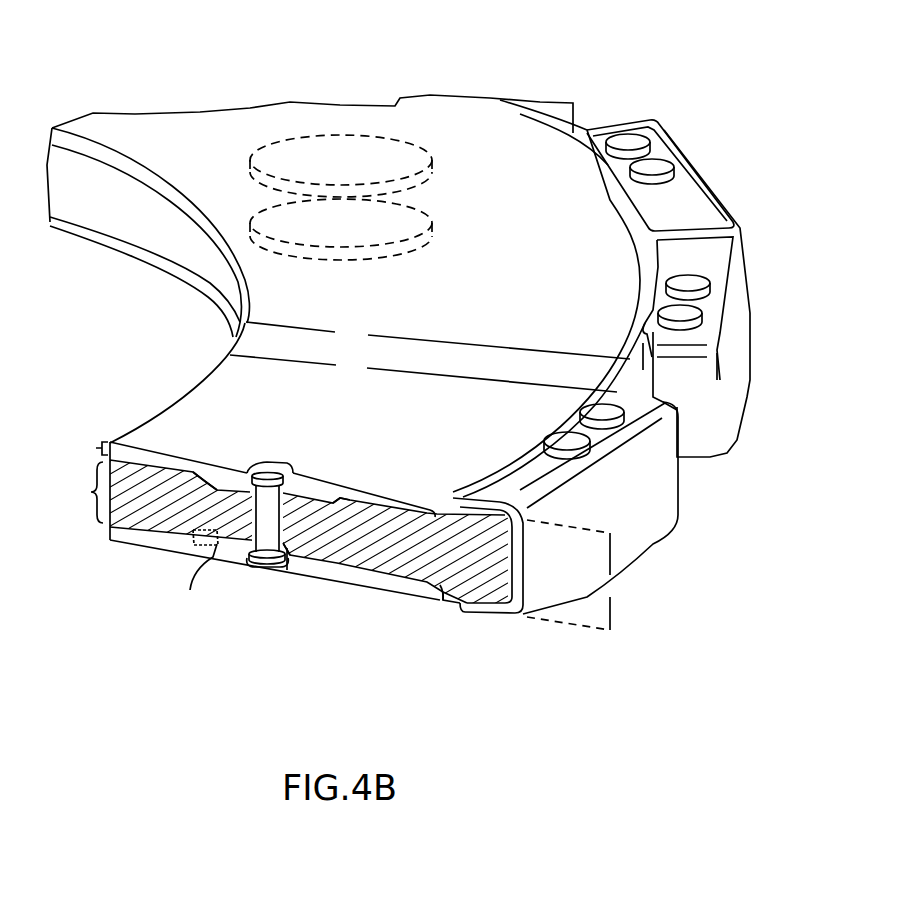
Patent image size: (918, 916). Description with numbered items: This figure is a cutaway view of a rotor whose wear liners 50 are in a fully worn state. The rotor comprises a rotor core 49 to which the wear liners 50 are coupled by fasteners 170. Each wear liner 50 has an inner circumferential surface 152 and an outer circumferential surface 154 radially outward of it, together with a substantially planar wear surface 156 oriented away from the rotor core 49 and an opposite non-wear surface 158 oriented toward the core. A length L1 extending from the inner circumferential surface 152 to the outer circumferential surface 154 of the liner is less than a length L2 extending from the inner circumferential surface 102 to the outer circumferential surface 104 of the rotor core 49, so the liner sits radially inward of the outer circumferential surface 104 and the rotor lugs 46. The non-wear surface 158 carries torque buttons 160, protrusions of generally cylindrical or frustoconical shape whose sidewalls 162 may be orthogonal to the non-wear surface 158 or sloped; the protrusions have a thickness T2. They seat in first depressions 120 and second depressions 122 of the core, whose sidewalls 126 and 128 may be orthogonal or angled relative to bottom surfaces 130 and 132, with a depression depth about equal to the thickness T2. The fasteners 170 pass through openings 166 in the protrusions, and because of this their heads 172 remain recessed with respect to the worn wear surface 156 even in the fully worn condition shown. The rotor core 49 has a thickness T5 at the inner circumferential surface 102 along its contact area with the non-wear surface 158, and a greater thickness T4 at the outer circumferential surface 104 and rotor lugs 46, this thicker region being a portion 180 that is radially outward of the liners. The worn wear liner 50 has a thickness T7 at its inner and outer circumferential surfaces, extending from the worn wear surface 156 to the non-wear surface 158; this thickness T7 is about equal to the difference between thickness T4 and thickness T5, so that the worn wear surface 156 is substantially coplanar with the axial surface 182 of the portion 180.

The wear liner 50 is at (143, 127).
The inner circumferential surface 102 is at (186, 246).
The rotor core 49 is at (102, 200).
The inner circumferential surface 152 is at (207, 367).
The torque button 160 is at (403, 197).
The first depression 120 is at (422, 177).
The second depression 122 is at (422, 223).
The outer circumferential surface 104 is at (620, 383).
The wear surface 156 is at (428, 409).
The non-wear surface 158 is at (127, 525).
The sidewall 126 is at (193, 480).
The bottom surface 130 is at (217, 490).
The head 172 is at (272, 476).
The fastener 170 is at (295, 498).
The sidewall 162 is at (343, 506).
The outer circumferential surface 154 is at (440, 502).
The axial surface 182 is at (460, 500).
The rotor lug 46 is at (523, 607).
The portion 180 is at (442, 585).
The sidewall 128 is at (337, 560).
The bottom surface 132 is at (308, 575).
The opening 166 is at (276, 583).
The length L1 is at (423, 373).
The length L2 is at (438, 339).
The thickness T2 is at (196, 579).
The thickness T4 is at (575, 575).
The thickness T5 is at (76, 492).
The thickness T7 is at (84, 449).